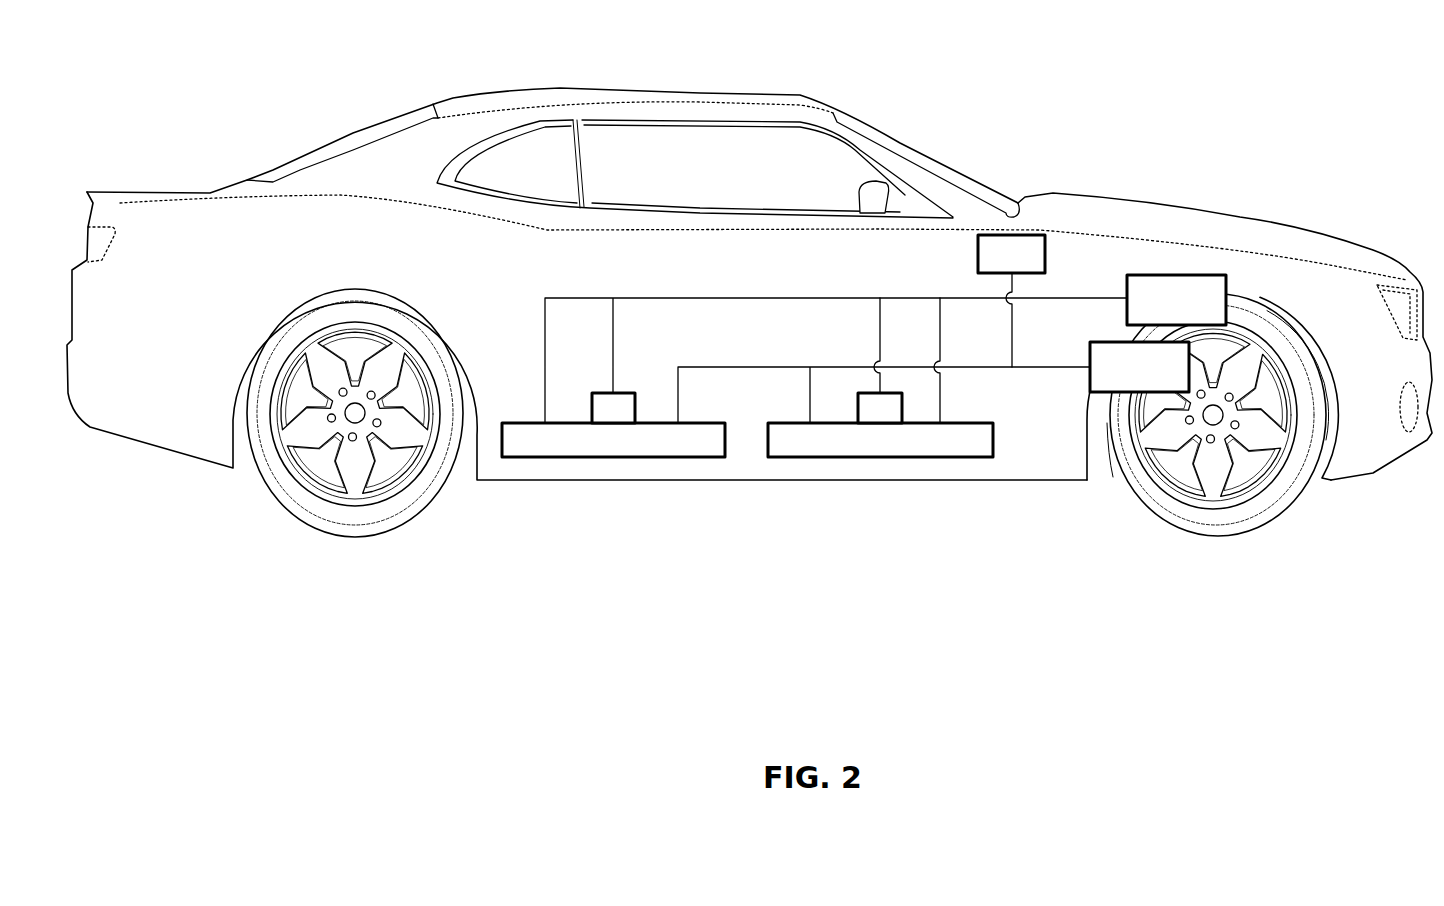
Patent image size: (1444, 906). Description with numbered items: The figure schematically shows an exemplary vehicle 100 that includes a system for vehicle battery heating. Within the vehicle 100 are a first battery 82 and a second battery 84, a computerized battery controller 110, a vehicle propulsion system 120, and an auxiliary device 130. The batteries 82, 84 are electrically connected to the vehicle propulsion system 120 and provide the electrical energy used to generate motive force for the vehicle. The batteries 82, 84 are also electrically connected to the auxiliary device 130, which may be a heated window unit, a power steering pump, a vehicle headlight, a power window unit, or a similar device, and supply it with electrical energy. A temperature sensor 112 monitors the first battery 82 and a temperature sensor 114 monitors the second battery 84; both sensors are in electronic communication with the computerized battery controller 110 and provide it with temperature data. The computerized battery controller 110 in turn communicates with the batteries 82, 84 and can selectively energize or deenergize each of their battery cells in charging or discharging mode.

The vehicle 100 is at (500, 122).
The first battery 82 is at (537, 459).
The second battery 84 is at (955, 459).
The temperature sensor 112 is at (613, 411).
The temperature sensor 114 is at (880, 411).
The computerized battery controller 110 is at (1159, 313).
The vehicle propulsion system 120 is at (1121, 380).
The auxiliary device 130 is at (1046, 250).